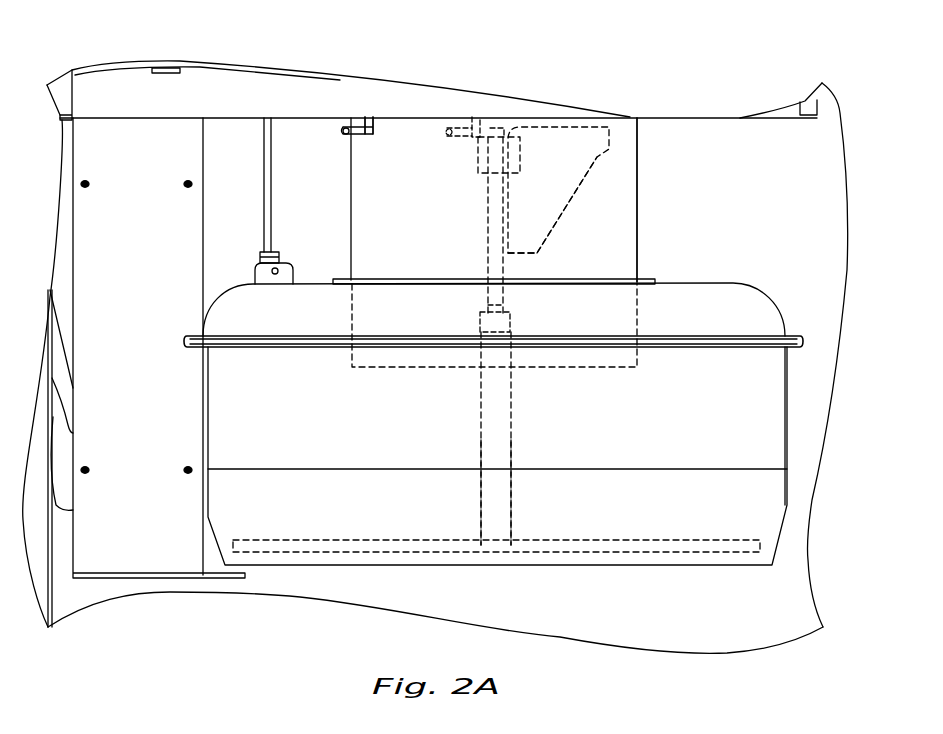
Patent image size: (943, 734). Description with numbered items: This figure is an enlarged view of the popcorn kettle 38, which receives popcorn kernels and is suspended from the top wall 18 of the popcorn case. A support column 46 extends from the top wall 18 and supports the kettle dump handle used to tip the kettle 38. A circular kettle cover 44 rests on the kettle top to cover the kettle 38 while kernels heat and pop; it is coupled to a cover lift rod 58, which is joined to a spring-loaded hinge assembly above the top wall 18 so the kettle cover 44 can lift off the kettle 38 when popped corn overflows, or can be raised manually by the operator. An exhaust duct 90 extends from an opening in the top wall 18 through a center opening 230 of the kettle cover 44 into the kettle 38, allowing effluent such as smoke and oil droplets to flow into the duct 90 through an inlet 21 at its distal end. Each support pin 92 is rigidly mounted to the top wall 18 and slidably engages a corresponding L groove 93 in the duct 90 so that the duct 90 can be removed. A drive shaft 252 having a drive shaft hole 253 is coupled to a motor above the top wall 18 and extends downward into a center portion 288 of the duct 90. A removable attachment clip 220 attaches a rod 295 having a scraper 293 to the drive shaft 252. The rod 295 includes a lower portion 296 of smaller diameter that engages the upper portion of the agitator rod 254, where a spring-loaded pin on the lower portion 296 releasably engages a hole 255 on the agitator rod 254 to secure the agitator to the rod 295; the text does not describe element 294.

The top wall 18 is at (777, 118).
The inlet 21 is at (640, 355).
The kettle 38 is at (655, 565).
The kettle cover 44 is at (770, 300).
The support column 46 is at (203, 230).
The cover lift rod 58 is at (273, 172).
The exhaust duct 90 is at (637, 164).
The support pin 92 is at (345, 118).
The L groove 93 is at (367, 118).
The removable attachment clip 220 is at (462, 157).
The center opening 230 is at (655, 281).
The drive shaft 252 is at (472, 141).
The drive shaft hole 253 is at (477, 165).
The agitator rod 254 is at (513, 450).
The hole 255 is at (510, 328).
The center portion 288 is at (372, 213).
The scraper 293 is at (573, 193).
The lever assembly 294 is at (573, 160).
The rod 295 is at (520, 268).
The lower portion 296 is at (505, 305).